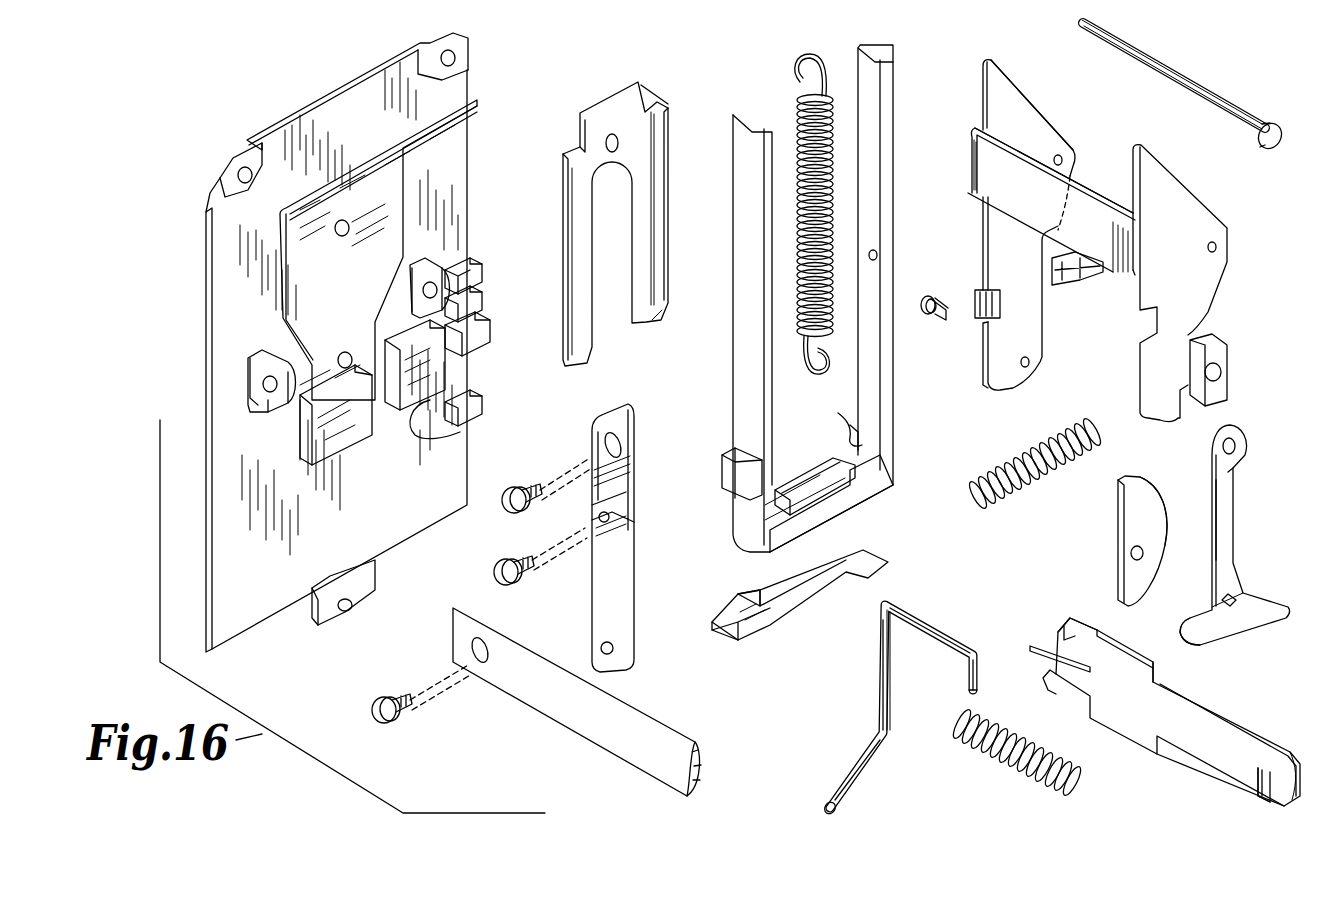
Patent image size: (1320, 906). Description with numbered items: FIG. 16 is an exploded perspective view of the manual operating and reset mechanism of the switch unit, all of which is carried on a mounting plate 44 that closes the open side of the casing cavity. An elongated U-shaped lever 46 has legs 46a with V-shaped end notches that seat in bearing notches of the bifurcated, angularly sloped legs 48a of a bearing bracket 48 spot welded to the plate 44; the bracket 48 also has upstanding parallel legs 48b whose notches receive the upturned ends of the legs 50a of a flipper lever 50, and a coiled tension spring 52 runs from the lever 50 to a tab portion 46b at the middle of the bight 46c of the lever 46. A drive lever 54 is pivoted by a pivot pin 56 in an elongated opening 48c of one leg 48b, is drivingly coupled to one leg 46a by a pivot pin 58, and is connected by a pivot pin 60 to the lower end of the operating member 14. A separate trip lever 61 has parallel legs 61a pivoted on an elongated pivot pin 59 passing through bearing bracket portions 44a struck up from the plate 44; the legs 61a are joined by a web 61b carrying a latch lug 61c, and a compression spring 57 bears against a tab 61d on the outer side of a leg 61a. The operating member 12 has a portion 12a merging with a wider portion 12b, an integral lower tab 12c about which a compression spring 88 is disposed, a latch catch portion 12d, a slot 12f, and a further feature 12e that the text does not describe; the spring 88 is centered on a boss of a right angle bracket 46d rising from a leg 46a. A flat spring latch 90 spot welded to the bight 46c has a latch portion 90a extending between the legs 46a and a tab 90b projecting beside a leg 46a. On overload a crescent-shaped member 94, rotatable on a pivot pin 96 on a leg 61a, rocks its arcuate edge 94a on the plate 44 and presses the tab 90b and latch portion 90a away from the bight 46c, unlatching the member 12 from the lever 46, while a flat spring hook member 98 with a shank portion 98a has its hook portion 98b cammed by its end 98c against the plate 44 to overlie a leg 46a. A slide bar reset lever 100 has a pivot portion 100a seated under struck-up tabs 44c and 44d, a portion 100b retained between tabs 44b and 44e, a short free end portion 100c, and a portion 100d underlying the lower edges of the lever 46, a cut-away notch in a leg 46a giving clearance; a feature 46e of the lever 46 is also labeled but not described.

The operating member 12 is at (1260, 725).
The portion of operating member 12a is at (1222, 730).
The wider portion of operating member 12b is at (1138, 690).
The integral tab 12c is at (1072, 630).
The latch catch portion 12d is at (1042, 648).
The slide bar notch 12e is at (1060, 684).
The slot 12f is at (1256, 796).
The operating member 14 is at (556, 712).
The mounting plate 44 is at (280, 592).
The bearing bracket portions 44a is at (258, 372).
The tab 44b is at (472, 270).
The struck up tab 44c is at (482, 412).
The struck up tab 44d is at (490, 340).
The third tab 44e is at (482, 306).
The U-shaped lever 46 is at (730, 352).
The legs of U-shaped lever 46a is at (886, 162).
The tab portion 46b is at (796, 475).
The bight 46c is at (868, 512).
The right angle bracket 46d is at (724, 470).
The channel tab 46e is at (848, 426).
The bearing bracket 48 is at (297, 283).
The bifurcated angularly sloped legs 48a is at (472, 100).
The upstanding parallel legs 48b is at (357, 448).
The elongated opening 48c is at (462, 433).
The flipper lever 50 is at (612, 88).
The legs of flipper lever 50a is at (664, 148).
The coiled tension spring 52 is at (800, 104).
The drive lever 54 is at (628, 566).
The pivot pin 56 is at (516, 580).
The compression spring 57 is at (986, 470).
The pivot pin 58 is at (520, 488).
The elongated pivot pin 59 is at (1198, 82).
The pivot pin 60 is at (386, 716).
The trip lever 61 is at (1090, 163).
The legs of trip lever 61a is at (1025, 110).
The web 61b is at (1017, 200).
The latch lug 61c is at (1068, 284).
The tab 61d is at (1202, 352).
The compression spring 88 is at (1016, 755).
The latch 90 is at (810, 590).
The latch portion 90a is at (740, 602).
The tab 90b is at (728, 636).
The crescent-shaped member 94 is at (1128, 528).
The arcuate edge 94a is at (1158, 504).
The pivot pin 96 is at (920, 298).
The hook member 98 is at (1238, 545).
The shank portion 98a is at (1227, 498).
The right angle hook portion 98b is at (1186, 630).
The end of hook member 98c is at (1260, 604).
The slide bar reset lever 100 is at (905, 612).
The central pivot portion 100a is at (880, 676).
The portion of reset lever 100b is at (942, 632).
The short free end portion 100c is at (968, 674).
The fourth integral portion 100d is at (860, 778).